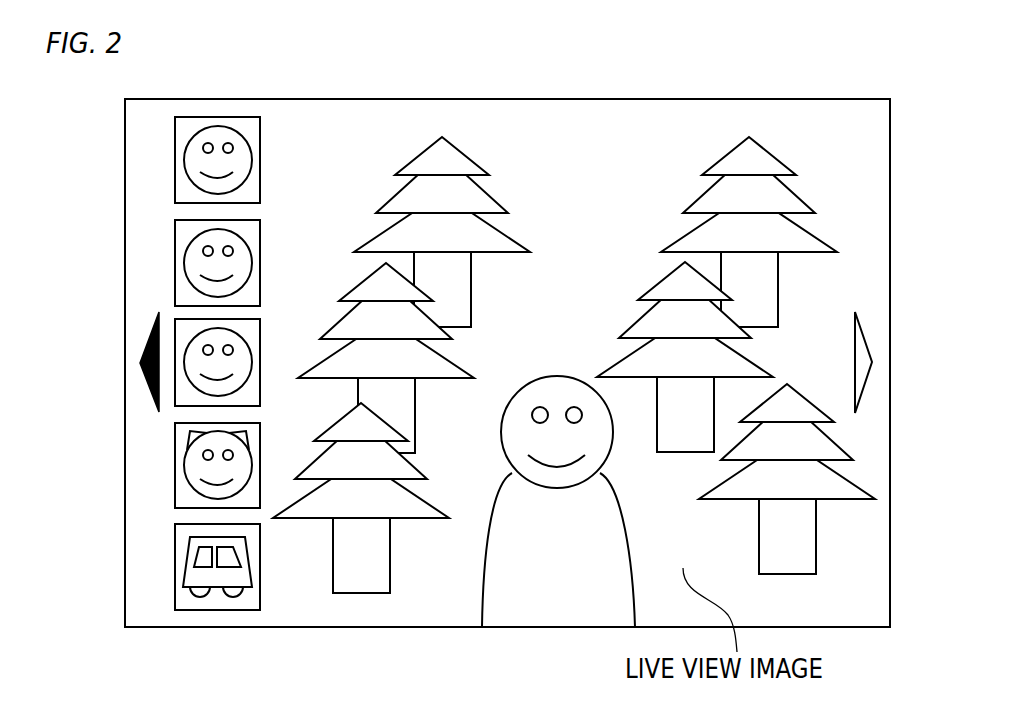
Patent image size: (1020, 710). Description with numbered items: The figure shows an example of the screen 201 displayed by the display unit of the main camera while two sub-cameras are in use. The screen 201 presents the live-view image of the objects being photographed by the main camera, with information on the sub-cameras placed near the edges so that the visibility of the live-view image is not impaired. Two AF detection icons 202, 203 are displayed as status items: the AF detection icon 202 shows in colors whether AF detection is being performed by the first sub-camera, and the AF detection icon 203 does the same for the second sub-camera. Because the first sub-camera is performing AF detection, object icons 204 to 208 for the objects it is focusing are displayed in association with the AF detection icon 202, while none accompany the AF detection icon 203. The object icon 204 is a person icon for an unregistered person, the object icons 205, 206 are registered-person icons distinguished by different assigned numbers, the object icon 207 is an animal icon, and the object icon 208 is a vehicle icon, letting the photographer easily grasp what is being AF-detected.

The screen 201 is at (787, 99).
The AF detection icon 202 is at (147, 340).
The AF detection icon 203 is at (863, 355).
The object icon 204 is at (175, 157).
The object icon 205 is at (175, 262).
The object icon 206 is at (185, 407).
The object icon 207 is at (175, 497).
The object icon 208 is at (175, 565).